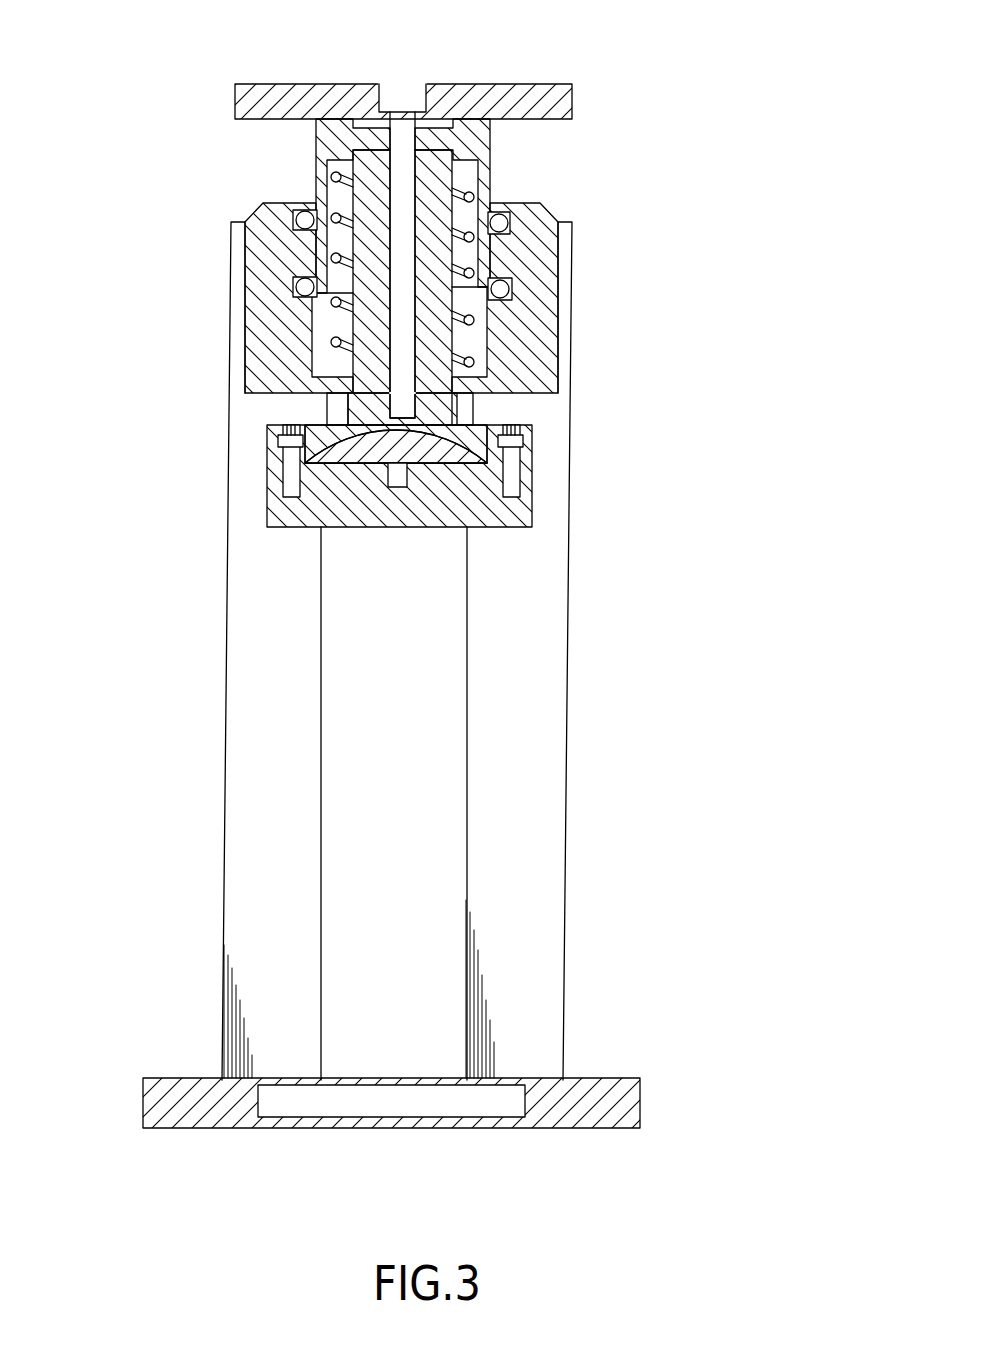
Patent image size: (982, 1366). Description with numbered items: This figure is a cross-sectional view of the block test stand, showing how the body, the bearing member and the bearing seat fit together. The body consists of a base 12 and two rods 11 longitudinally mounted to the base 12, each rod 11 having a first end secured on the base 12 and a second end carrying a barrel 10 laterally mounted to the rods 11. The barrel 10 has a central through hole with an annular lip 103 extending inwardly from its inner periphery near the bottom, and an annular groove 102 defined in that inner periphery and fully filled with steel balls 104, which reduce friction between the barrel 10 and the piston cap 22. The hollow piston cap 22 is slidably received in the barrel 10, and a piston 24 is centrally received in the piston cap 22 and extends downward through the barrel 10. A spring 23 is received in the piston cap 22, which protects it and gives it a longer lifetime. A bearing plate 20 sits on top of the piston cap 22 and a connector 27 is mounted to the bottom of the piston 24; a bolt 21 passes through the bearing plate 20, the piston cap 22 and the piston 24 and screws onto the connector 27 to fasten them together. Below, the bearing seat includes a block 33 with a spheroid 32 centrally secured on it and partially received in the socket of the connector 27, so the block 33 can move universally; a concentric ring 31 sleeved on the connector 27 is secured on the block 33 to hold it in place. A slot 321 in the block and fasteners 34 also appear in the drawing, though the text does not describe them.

The barrel 10 is at (533, 293).
The rod 11 is at (268, 858).
The base 12 is at (187, 1107).
The bearing plate 20 is at (535, 97).
The bolt 21 is at (421, 83).
The piston cap 22 is at (482, 140).
The spring 23 is at (476, 197).
The piston 24 is at (438, 356).
The connector 27 is at (437, 418).
The concentric ring 31 is at (275, 448).
The spheroid 32 is at (530, 438).
The slot 321 is at (440, 515).
The block 33 is at (287, 515).
The bolt 34 is at (287, 467).
The annular groove 102 is at (292, 287).
The annular lip 103 is at (256, 358).
The steel balls 104 is at (268, 202).